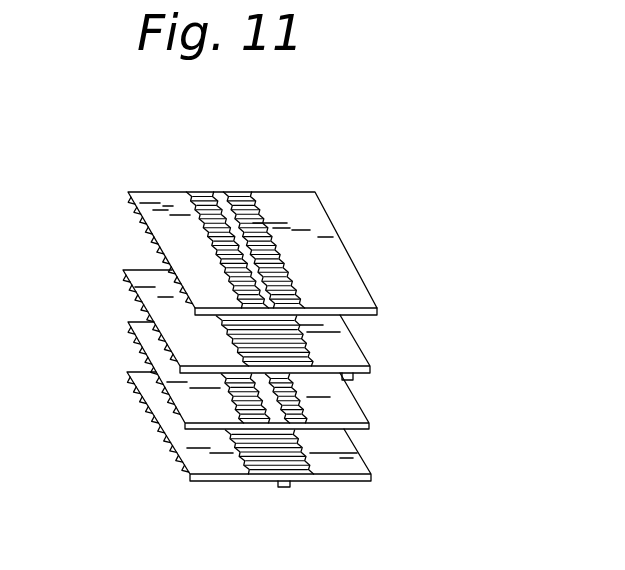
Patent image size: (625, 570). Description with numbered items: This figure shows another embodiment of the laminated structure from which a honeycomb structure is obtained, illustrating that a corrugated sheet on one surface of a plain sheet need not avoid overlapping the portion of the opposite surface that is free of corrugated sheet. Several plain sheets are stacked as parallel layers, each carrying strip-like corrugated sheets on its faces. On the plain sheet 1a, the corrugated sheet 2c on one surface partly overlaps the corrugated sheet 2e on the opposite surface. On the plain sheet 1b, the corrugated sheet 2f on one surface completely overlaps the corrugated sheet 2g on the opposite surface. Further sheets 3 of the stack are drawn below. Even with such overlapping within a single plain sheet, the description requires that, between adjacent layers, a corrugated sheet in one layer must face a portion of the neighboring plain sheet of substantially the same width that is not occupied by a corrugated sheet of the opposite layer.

The plain sheet 1a is at (372, 288).
The plain sheet 1b is at (366, 353).
The corrugated sheet 2c is at (367, 318).
The corrugated sheet 2e is at (285, 272).
The corrugated sheet 2f is at (353, 392).
The corrugated sheet 2g is at (222, 345).
The ceramic sheet with saw-tooth edge 3 is at (347, 378).